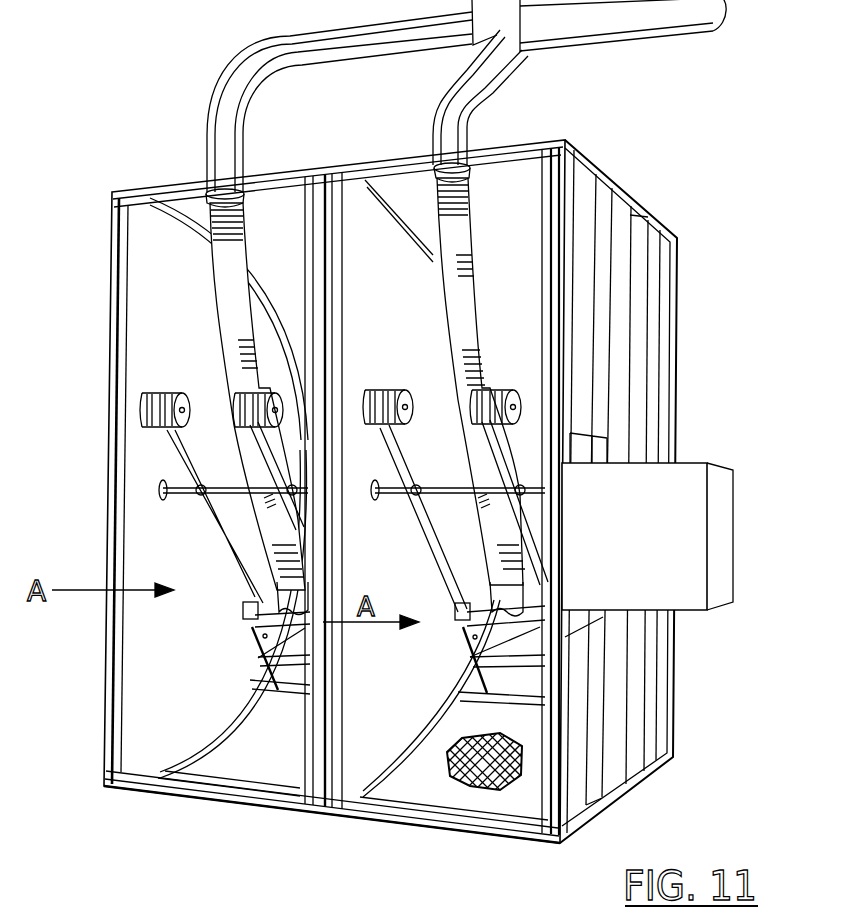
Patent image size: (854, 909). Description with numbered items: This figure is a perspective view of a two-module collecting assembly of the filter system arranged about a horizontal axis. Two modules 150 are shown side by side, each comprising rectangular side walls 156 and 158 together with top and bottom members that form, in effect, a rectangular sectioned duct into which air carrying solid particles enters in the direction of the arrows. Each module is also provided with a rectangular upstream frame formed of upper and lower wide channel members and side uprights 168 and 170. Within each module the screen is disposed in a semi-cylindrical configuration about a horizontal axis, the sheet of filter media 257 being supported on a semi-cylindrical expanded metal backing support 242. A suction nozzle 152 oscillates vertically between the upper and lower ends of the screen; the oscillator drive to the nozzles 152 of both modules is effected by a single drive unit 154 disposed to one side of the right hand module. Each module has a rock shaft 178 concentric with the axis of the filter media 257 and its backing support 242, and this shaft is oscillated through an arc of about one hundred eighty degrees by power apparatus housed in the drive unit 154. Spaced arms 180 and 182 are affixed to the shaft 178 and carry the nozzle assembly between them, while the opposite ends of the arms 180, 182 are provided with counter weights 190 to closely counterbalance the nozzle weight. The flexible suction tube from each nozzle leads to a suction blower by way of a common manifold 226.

The common manifold 226 is at (658, 40).
The side wall 158 is at (354, 200).
The side wall 156 is at (585, 193).
The counter weight 190 is at (484, 403).
The arm 180 is at (513, 457).
The arm 182 is at (437, 540).
The rock shaft 178 is at (188, 494).
The drive unit 154 is at (725, 545).
The side upright 170 is at (120, 678).
The nozzle 152 is at (277, 690).
The side upright 168 is at (300, 735).
The module 150 is at (303, 503).
The expanded metal backing support 242 is at (493, 773).
The filter media 257 is at (283, 895).